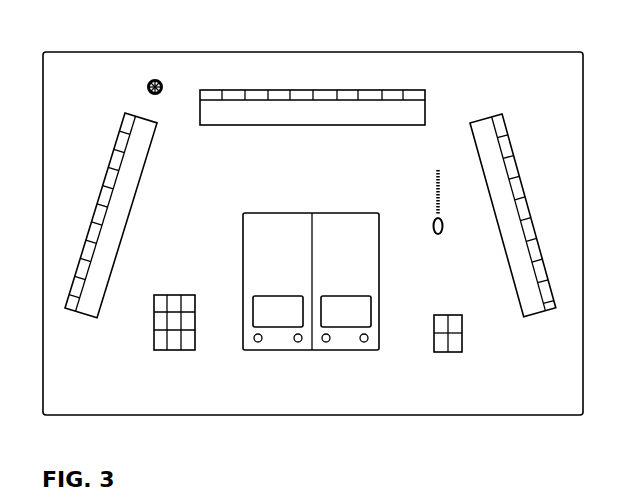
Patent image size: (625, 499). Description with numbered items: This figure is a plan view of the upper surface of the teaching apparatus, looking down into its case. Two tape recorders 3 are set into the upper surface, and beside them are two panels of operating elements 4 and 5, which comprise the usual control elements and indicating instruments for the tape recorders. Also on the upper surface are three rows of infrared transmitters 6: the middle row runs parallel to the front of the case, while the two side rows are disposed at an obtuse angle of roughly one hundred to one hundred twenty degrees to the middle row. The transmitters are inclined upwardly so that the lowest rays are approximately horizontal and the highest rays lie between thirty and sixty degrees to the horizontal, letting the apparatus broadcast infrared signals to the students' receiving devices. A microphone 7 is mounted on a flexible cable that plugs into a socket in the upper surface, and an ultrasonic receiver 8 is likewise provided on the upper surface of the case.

The tape recorders 3 is at (280, 338).
The panel of operating elements 4 is at (443, 338).
The panel of operating elements 5 is at (173, 325).
The infrared transmitters 6 is at (90, 224).
The microphone 7 is at (441, 217).
The ultrasonic receiver 8 is at (154, 79).